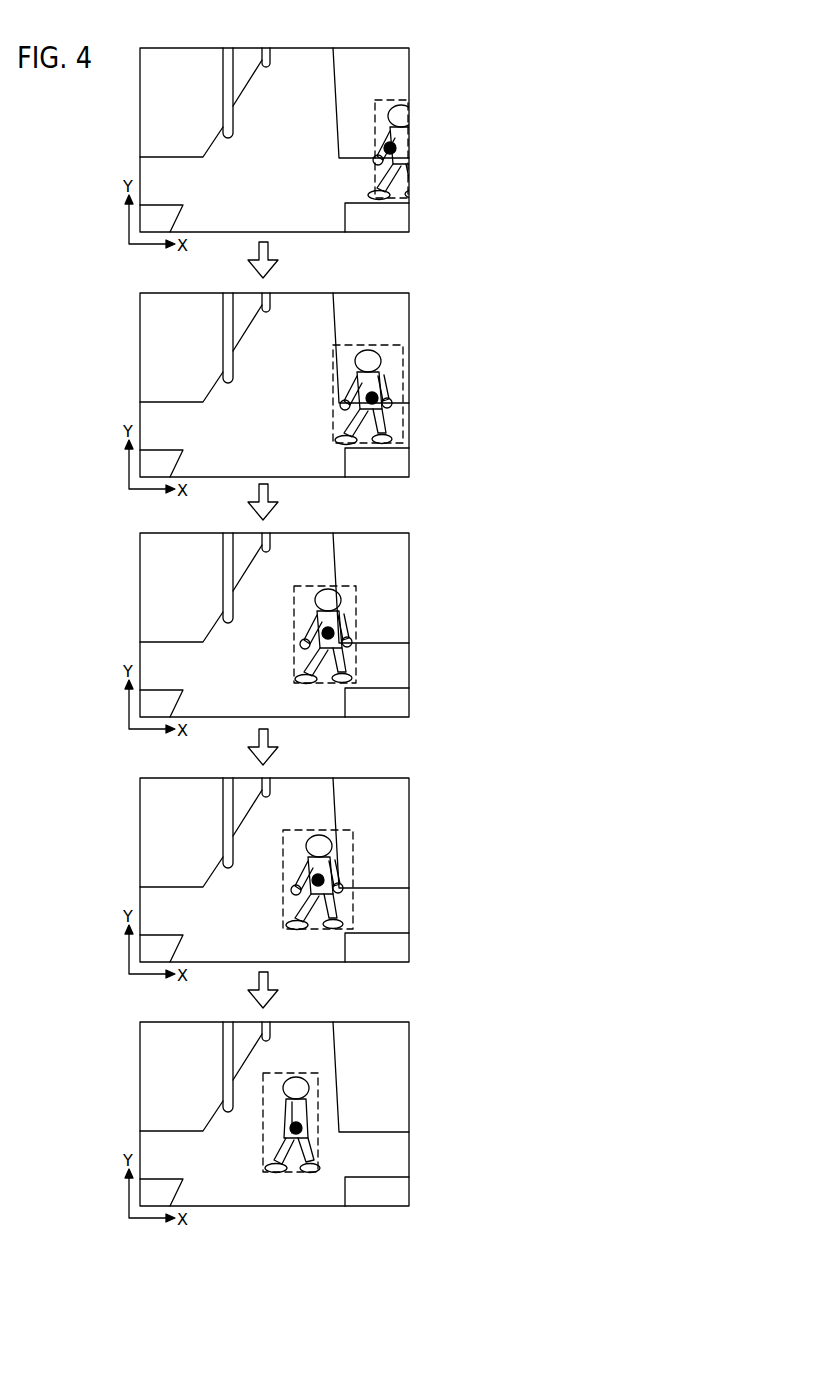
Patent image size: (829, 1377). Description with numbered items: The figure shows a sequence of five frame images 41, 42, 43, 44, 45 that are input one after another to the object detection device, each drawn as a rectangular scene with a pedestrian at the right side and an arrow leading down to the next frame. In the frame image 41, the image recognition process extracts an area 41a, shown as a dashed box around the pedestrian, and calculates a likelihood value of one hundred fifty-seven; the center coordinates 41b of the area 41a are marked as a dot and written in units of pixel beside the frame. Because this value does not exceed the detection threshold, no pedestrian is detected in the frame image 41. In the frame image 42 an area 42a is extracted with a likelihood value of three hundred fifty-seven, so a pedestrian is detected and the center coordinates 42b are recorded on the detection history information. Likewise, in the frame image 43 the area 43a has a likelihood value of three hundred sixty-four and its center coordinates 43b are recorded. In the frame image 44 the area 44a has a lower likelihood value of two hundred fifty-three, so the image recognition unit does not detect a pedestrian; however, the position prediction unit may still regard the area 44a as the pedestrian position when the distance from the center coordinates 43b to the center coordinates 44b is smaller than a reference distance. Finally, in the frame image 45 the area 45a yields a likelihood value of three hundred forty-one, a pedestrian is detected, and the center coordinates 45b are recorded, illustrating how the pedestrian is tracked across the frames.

The frame image 41 is at (140, 138).
The area 41a is at (385, 100).
The center coordinates 41b is at (397, 148).
The frame image 42 is at (140, 383).
The area 42a is at (373, 345).
The center coordinates 42b is at (400, 385).
The frame image 43 is at (140, 625).
The area 43a is at (348, 585).
The center coordinates 43b is at (340, 625).
The frame image 44 is at (140, 869).
The area 44a is at (352, 836).
The center coordinates 44b is at (340, 876).
The frame image 45 is at (140, 1112).
The area 45a is at (318, 1075).
The center coordinates 45b is at (302, 1126).